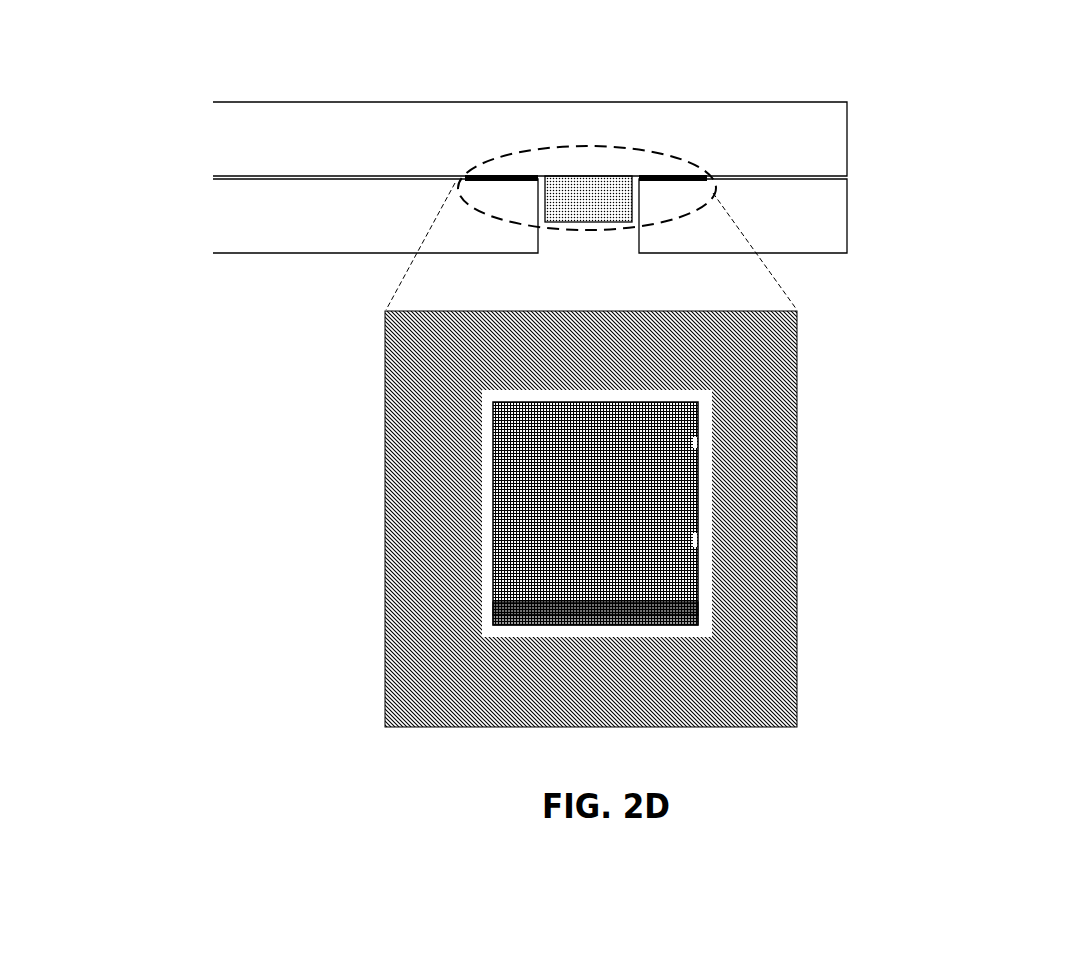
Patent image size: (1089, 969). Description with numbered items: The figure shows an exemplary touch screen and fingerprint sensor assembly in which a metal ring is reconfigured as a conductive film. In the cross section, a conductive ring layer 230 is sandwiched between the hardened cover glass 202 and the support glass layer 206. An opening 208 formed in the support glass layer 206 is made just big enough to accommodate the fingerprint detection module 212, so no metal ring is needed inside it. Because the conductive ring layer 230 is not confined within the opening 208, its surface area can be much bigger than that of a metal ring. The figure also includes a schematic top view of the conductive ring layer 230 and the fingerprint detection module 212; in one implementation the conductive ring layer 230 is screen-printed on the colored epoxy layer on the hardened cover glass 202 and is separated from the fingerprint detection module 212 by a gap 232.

The hardened cover glass 202 is at (659, 101).
The support glass layer 206 is at (853, 290).
The opening 208 is at (596, 233).
The fingerprint detection module 212 is at (613, 180).
The conductive ring layer 230 is at (385, 459).
The gap 232 is at (492, 586).